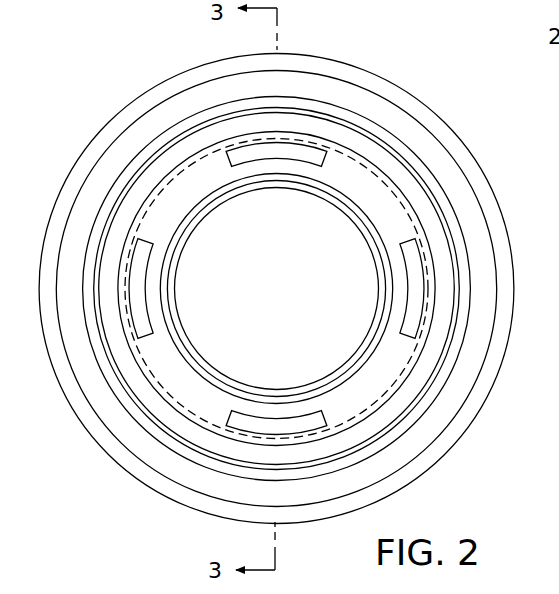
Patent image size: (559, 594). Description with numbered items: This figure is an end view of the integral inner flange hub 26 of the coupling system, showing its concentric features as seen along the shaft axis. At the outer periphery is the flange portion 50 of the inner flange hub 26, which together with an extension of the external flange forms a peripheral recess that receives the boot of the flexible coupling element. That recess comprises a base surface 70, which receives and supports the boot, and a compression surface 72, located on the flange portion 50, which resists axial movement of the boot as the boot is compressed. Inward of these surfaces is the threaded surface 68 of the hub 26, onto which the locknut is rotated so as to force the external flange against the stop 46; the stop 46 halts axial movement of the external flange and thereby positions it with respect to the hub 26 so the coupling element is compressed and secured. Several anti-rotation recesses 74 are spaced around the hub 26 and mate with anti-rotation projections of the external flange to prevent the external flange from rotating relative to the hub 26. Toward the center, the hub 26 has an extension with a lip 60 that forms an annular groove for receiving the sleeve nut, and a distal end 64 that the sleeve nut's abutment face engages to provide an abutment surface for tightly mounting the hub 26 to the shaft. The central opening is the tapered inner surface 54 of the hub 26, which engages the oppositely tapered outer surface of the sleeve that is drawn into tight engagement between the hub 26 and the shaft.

The inner flange hub 26 is at (95, 96).
The flange portion 50 is at (342, 72).
The compression surface 72 is at (368, 107).
The base surface 70 is at (412, 155).
The threaded surface 68 is at (418, 222).
The anti-rotation recesses 74 is at (415, 285).
The lip 60 is at (382, 337).
The distal end 64 is at (357, 360).
The stop 46 is at (397, 403).
The tapered inner surface 54 is at (216, 370).